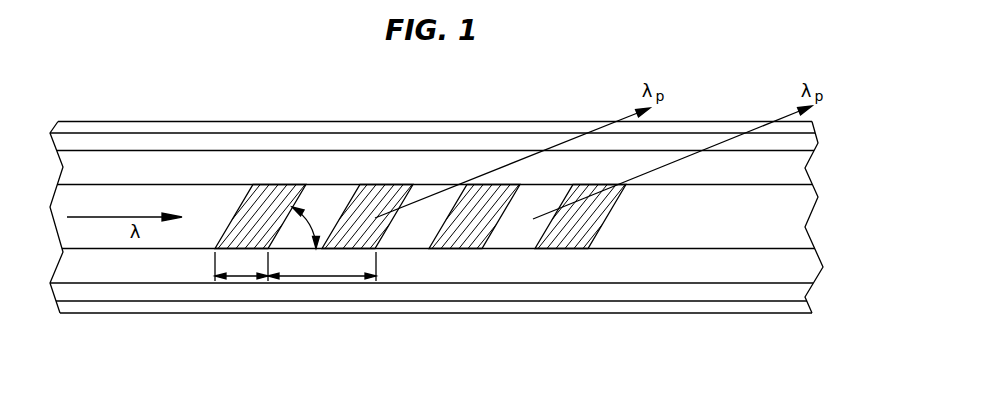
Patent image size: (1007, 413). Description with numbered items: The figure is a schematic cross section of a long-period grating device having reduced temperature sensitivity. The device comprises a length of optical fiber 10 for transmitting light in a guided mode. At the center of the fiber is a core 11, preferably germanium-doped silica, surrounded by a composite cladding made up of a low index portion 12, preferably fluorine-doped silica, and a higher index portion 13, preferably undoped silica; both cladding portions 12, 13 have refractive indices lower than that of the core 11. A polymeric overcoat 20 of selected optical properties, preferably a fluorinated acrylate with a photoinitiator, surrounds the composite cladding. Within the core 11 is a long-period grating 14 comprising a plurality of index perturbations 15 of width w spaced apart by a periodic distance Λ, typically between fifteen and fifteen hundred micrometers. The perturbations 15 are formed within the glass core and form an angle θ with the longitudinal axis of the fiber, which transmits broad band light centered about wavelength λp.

The optical fiber 10 is at (610, 91).
The core 11 is at (135, 235).
The low index portion of the cladding 12 is at (132, 273).
The higher index portion of the cladding 13 is at (147, 145).
The long-period grating 14 is at (420, 257).
The index perturbation 15 is at (481, 232).
The polymeric overcoat 20 is at (342, 120).